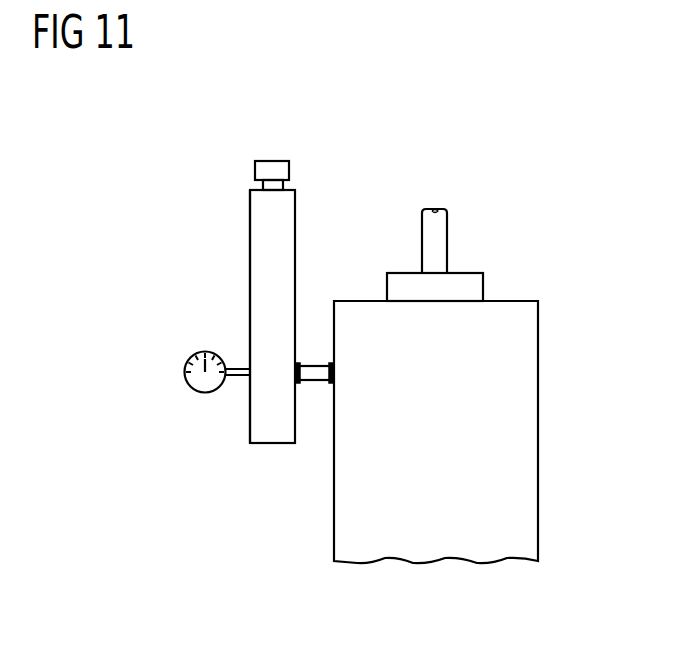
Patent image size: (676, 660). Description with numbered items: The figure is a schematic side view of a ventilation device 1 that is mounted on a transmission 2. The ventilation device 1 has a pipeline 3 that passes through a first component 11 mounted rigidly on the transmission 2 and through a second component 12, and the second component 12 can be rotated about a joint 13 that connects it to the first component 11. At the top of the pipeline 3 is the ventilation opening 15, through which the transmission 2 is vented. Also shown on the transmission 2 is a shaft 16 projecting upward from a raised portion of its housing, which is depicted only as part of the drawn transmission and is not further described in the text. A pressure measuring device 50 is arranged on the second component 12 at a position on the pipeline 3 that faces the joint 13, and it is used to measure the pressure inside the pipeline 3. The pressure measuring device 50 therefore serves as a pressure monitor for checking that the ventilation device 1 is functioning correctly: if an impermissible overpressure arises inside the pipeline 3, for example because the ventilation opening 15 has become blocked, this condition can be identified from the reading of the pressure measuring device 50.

The ventilation device 1 is at (339, 231).
The transmission 2 is at (538, 358).
The pipeline 3 is at (258, 265).
The first component 11 is at (322, 380).
The second component 12 is at (250, 224).
The joint 13 is at (300, 364).
The ventilation opening 15 is at (273, 160).
The shaft 16 is at (448, 237).
The pressure measuring device 50 is at (191, 391).